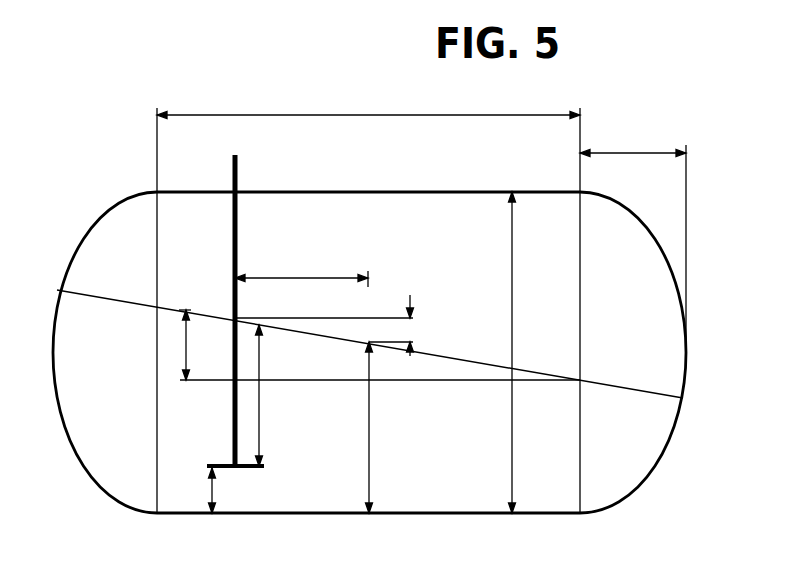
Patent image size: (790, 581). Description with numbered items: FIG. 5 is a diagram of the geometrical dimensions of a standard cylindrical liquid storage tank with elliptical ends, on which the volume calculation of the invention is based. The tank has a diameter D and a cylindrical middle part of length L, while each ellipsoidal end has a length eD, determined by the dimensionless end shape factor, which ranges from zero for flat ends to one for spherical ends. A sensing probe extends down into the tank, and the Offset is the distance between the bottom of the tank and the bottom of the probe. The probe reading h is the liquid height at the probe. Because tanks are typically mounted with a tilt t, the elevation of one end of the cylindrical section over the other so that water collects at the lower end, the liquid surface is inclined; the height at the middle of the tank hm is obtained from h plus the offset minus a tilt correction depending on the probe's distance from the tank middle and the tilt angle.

The length of the cylindrical part of the tank L is at (372, 113).
The length of each ellipsoidal end eD is at (625, 152).
The diameter of the tank D is at (513, 342).
The tilt t is at (187, 341).
The probe reading h is at (260, 405).
The liquid height at the middle of the tank hm is at (370, 471).
The offset Offset is at (217, 488).